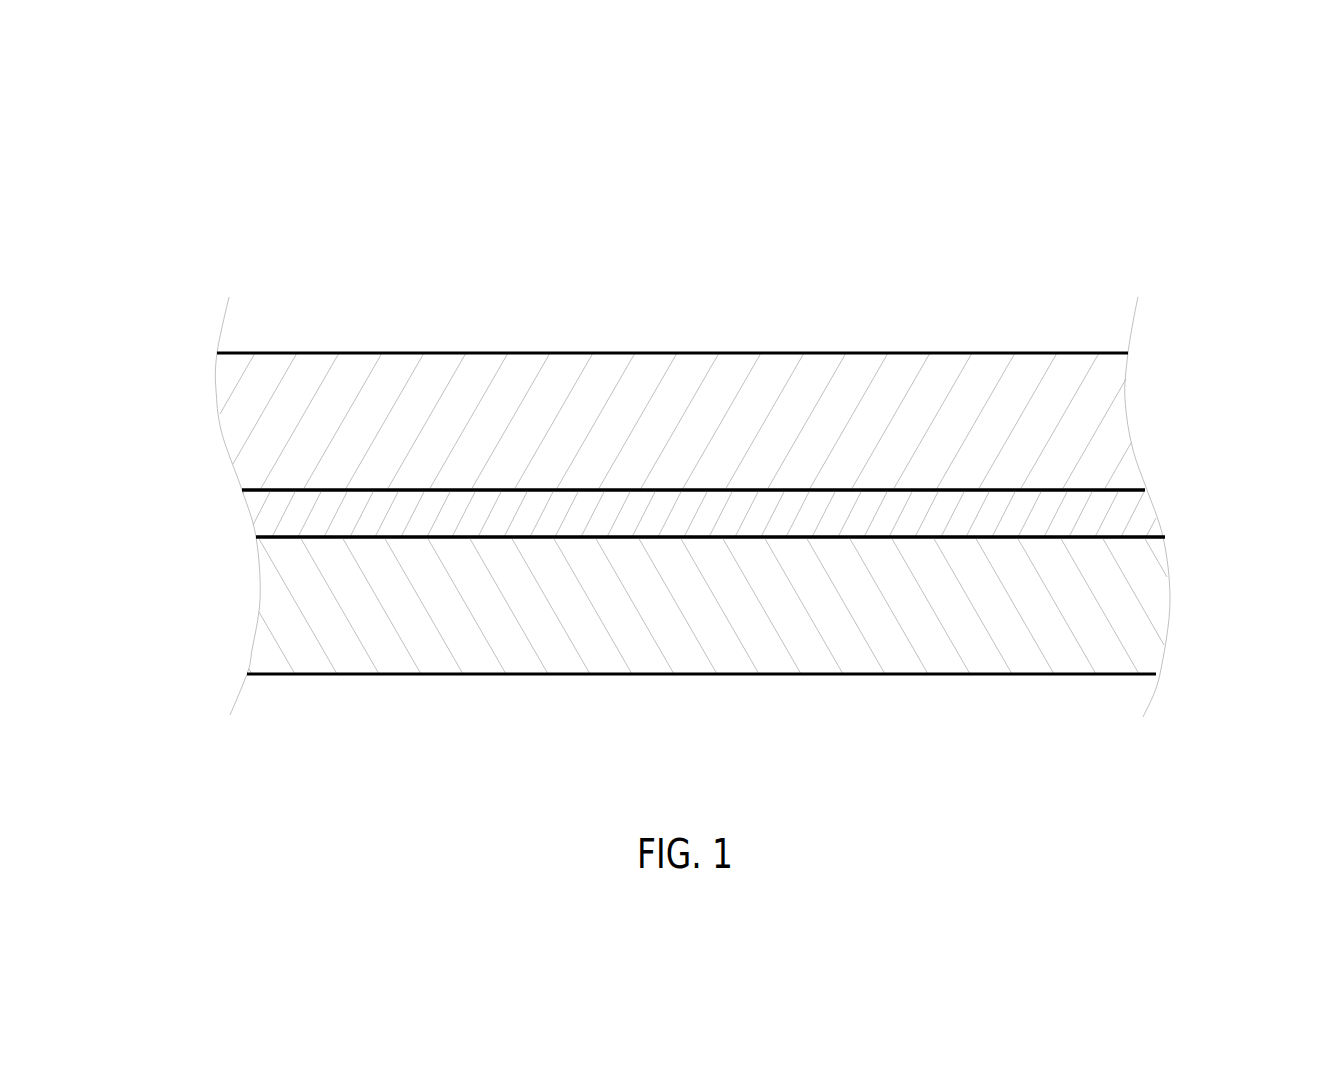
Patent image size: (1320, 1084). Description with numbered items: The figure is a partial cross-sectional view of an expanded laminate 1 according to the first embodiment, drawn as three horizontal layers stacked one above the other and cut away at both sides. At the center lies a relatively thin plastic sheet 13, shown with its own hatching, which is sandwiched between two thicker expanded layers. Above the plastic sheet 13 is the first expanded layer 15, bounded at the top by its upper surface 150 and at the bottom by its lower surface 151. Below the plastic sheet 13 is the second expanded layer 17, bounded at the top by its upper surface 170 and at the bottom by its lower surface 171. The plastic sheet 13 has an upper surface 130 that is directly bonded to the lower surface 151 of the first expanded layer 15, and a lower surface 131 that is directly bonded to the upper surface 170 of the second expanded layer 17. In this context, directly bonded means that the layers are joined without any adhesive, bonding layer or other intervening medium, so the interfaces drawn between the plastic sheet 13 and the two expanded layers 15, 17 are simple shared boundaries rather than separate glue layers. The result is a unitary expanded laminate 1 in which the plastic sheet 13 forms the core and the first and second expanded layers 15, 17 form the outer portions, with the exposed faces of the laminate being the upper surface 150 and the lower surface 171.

The expanded laminate 1 is at (983, 208).
The first expanded layer 15 is at (711, 391).
The upper surface of the first expanded layer 150 is at (1095, 353).
The lower surface of the first expanded layer 151 is at (1145, 491).
The plastic sheet 13 is at (703, 517).
The upper surface of the plastic sheet 130 is at (1107, 490).
The lower surface of the plastic sheet 131 is at (1158, 538).
The second expanded layer 17 is at (712, 632).
The upper surface of the second expanded layer 170 is at (1146, 535).
The lower surface of the second expanded layer 171 is at (1140, 674).